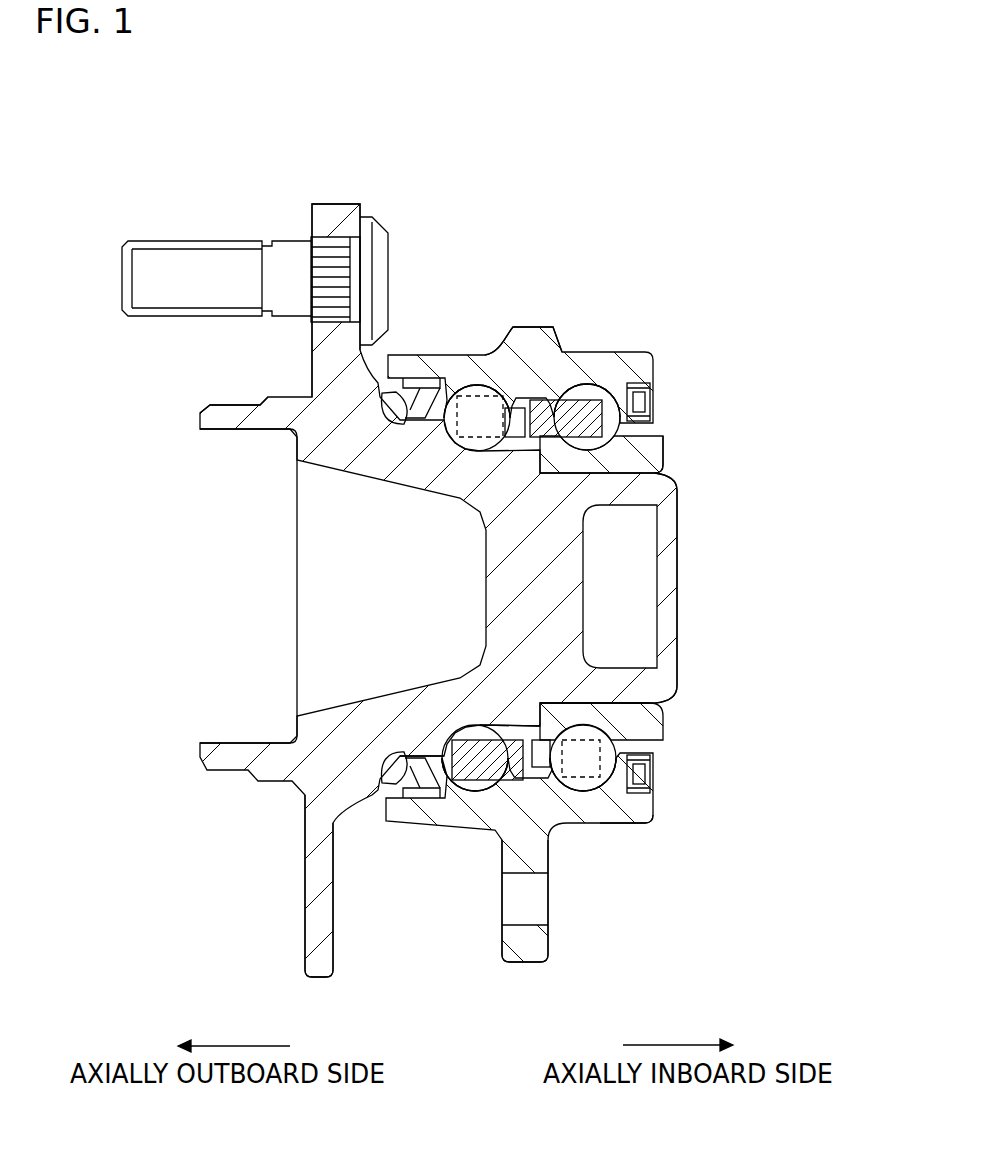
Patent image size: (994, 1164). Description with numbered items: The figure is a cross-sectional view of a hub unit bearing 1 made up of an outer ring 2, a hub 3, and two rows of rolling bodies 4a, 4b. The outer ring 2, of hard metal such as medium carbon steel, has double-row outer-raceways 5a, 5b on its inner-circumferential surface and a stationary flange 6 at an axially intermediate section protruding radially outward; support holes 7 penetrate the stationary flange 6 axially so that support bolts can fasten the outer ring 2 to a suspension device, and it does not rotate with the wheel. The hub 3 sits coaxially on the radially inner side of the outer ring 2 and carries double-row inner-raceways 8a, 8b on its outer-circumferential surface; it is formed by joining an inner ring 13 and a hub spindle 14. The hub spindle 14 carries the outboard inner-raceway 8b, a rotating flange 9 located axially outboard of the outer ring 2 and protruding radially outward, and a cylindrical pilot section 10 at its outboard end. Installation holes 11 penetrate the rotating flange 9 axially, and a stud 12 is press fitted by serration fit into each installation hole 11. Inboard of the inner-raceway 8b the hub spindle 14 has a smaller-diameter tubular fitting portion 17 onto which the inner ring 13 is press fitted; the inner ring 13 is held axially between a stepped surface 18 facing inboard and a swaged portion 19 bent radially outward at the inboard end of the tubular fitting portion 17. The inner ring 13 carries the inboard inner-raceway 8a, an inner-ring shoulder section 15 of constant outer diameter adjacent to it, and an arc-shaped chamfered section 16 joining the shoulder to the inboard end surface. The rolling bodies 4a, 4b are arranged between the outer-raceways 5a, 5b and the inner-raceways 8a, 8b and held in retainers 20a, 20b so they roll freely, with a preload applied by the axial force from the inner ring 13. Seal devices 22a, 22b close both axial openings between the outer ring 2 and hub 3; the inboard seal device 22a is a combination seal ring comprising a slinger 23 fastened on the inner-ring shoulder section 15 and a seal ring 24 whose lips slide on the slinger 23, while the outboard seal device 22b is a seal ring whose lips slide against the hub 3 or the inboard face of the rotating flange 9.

The hub unit bearing 1 is at (660, 305).
The outer ring 2 is at (545, 327).
The hub 3 is at (190, 660).
The rolling body 4a is at (583, 390).
The rolling body 4b is at (485, 385).
The outer-raceway 5a is at (600, 365).
The outer-raceway 5b is at (456, 382).
The stationary flange 6 is at (520, 965).
The support hole 7 is at (552, 920).
The inner-raceway 8a is at (658, 702).
The inner-raceway 8b is at (285, 781).
The rotating flange 9 is at (338, 203).
The pilot section 10 is at (205, 410).
The installation hole 11 is at (365, 212).
The stud 12 is at (208, 262).
The inner ring 13 is at (662, 447).
The hub spindle 14 is at (403, 746).
The inner-ring shoulder section 15 is at (655, 400).
The chamfered section 16 is at (668, 428).
The tubular fitting portion 17 is at (678, 484).
The stepped surface 18 is at (560, 340).
The swaged portion 19 is at (665, 688).
The retainer 20a is at (675, 370).
The retainer 20b is at (457, 783).
The seal device 22a is at (687, 771).
The seal device 22b is at (400, 800).
The slinger 23 is at (655, 768).
The seal ring 24 is at (647, 824).